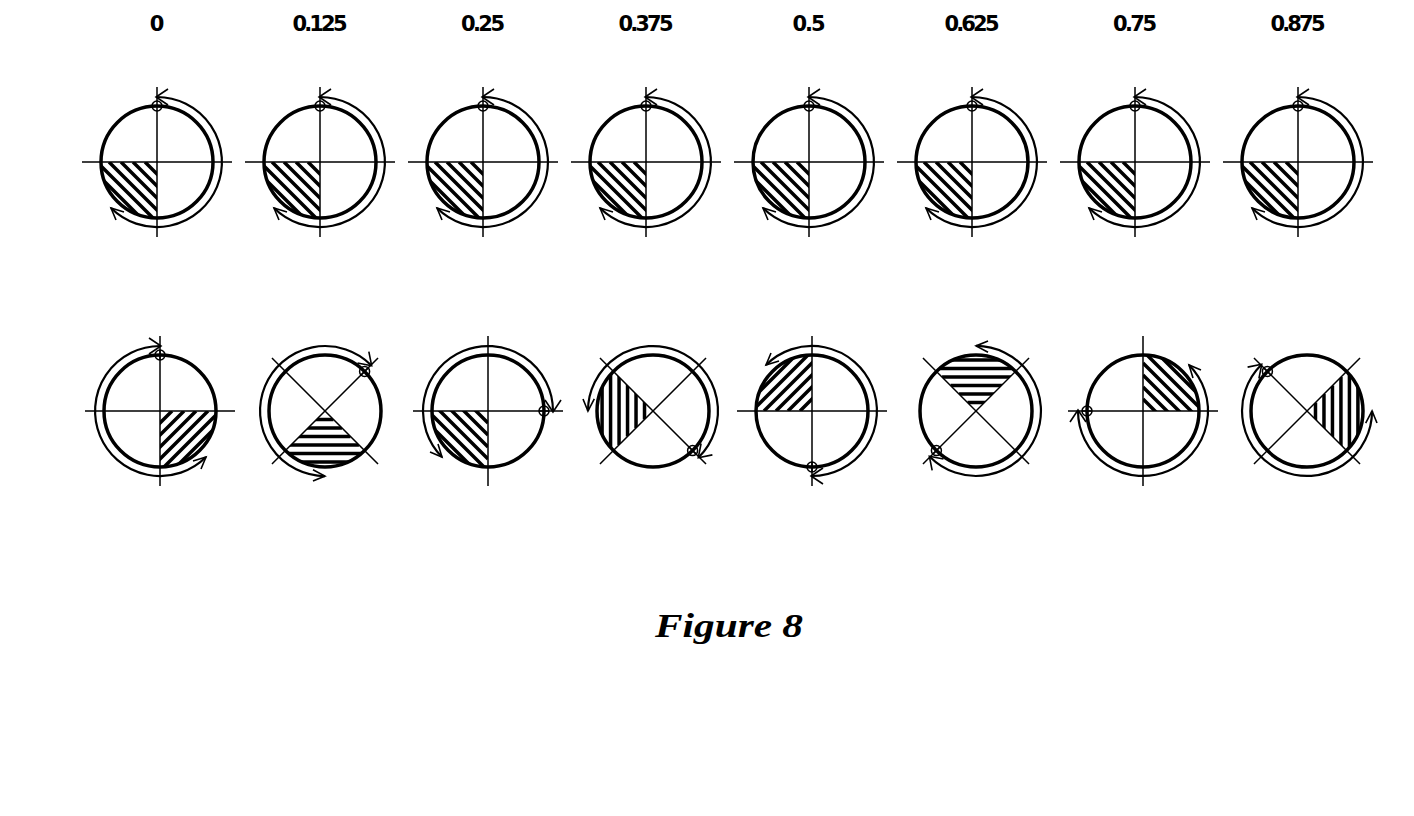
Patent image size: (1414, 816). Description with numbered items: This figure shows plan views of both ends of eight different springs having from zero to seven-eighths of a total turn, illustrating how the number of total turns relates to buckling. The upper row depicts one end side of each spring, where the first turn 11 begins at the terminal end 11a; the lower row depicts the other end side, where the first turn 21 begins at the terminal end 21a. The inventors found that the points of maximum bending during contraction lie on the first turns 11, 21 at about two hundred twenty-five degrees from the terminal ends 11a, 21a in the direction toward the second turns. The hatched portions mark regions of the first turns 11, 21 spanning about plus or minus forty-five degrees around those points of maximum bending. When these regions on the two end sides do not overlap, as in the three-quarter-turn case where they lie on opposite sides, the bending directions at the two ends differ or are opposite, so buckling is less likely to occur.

The first turn 11 is at (113, 124).
The terminal end 11a is at (148, 105).
The first turn 21 is at (200, 369).
The terminal end 21a is at (165, 349).